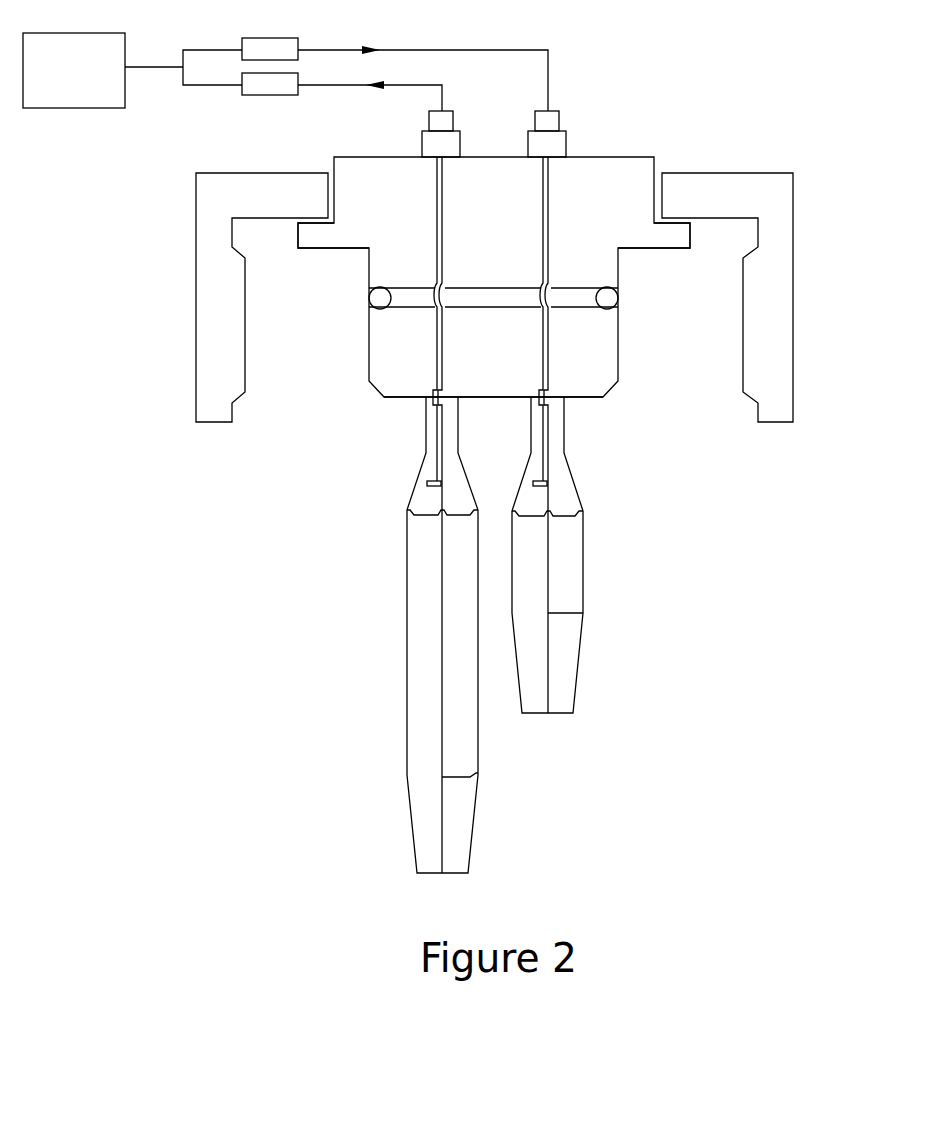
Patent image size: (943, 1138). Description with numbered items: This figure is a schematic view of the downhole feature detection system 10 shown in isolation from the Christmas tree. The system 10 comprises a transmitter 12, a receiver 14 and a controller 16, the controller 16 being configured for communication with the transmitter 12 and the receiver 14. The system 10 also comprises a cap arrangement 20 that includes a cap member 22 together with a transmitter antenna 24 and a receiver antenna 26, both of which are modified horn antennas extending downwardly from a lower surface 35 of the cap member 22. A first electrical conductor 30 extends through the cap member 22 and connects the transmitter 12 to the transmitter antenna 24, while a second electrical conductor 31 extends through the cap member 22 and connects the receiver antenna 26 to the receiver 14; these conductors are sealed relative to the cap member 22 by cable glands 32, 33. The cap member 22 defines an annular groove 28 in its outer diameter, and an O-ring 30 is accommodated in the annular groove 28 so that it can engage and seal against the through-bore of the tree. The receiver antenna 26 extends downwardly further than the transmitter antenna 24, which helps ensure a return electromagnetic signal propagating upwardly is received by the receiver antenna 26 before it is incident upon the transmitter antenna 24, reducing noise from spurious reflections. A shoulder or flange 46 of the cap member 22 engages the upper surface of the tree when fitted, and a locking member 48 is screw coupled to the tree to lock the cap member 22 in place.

The system 10 is at (132, 415).
The transmitter 12 is at (272, 37).
The receiver 14 is at (272, 97).
The controller 16 is at (87, 108).
The cap arrangement 20 is at (716, 128).
The cap member 22 is at (618, 177).
The transmitter antenna 24 is at (597, 582).
The receiver antenna 26 is at (379, 553).
The annular groove 28 is at (413, 298).
The first electrical conductor 30 is at (437, 47).
The second electrical conductor 31 is at (352, 87).
The cable gland 32 is at (566, 143).
The cable gland 33 is at (422, 143).
The lower surface 35 is at (398, 398).
The shoulder or flange 46 is at (342, 250).
The locking member 48 is at (773, 287).